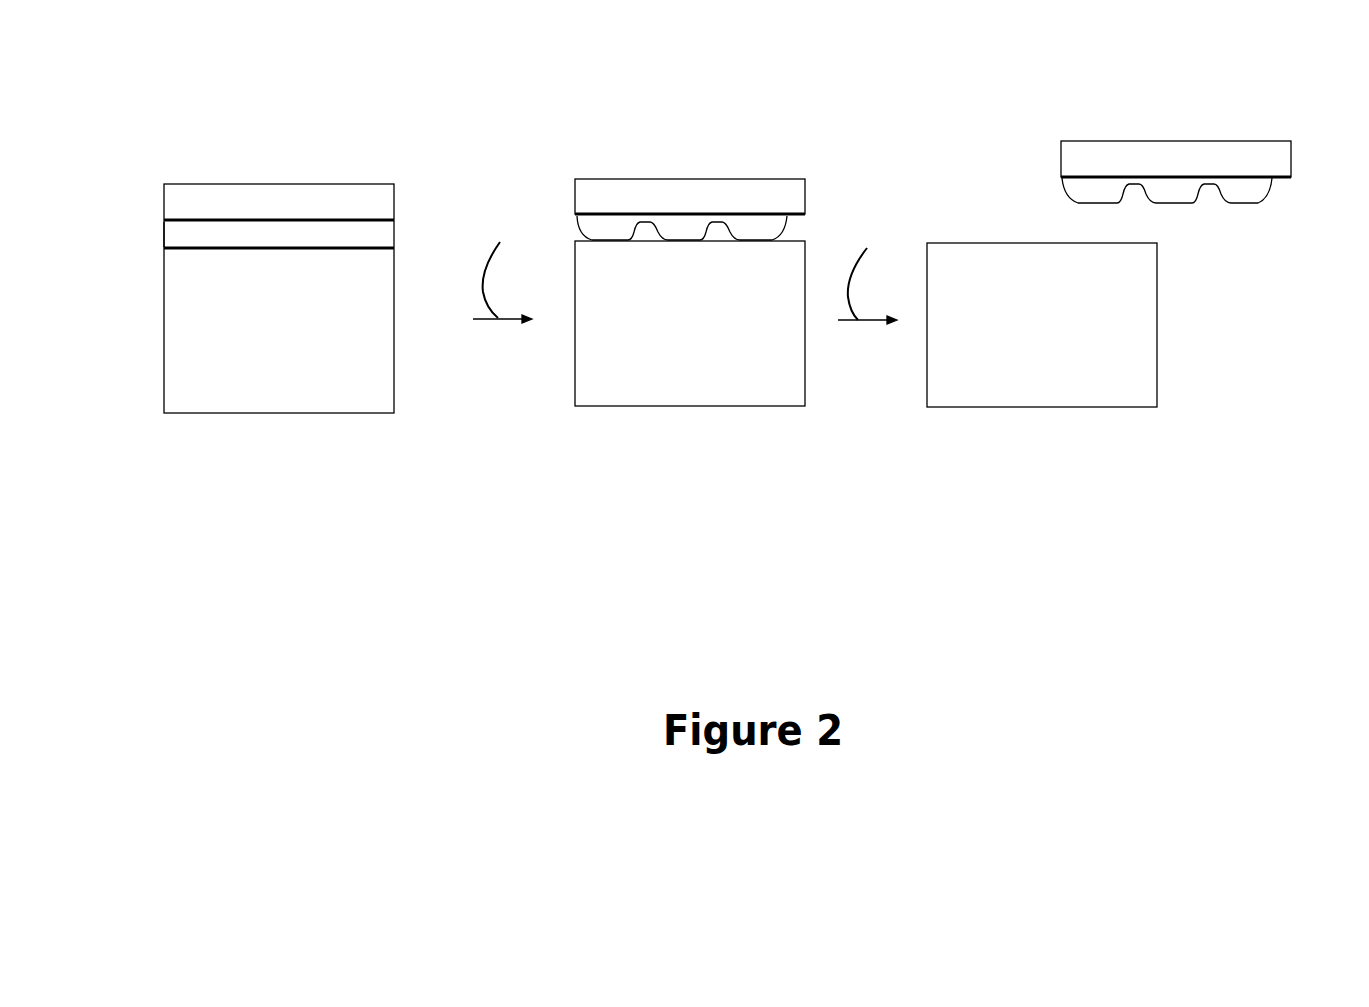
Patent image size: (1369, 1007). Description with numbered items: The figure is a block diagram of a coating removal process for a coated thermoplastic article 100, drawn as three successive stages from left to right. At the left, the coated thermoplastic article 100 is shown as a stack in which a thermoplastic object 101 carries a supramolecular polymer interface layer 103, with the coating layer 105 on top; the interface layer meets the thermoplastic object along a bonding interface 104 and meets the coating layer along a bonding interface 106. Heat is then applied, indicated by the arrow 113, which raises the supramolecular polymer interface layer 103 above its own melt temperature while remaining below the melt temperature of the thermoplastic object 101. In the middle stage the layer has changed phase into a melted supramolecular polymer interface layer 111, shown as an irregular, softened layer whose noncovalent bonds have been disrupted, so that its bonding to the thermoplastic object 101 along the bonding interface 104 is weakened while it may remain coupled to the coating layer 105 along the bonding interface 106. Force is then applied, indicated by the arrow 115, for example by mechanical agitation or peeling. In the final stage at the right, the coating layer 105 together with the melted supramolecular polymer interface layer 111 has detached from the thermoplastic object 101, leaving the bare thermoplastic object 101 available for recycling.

The coated thermoplastic article 100 is at (282, 452).
The thermoplastic object 101 is at (255, 341).
The supramolecular polymer interface layer 103 is at (165, 237).
The bonding interface 104 is at (180, 248).
The coating layer 105 is at (395, 193).
The bonding interface 106 is at (303, 220).
The melted supramolecular polymer interface layer 111 is at (600, 233).
The heating process arrow 113 is at (501, 280).
The application of force arrow 115 is at (867, 287).